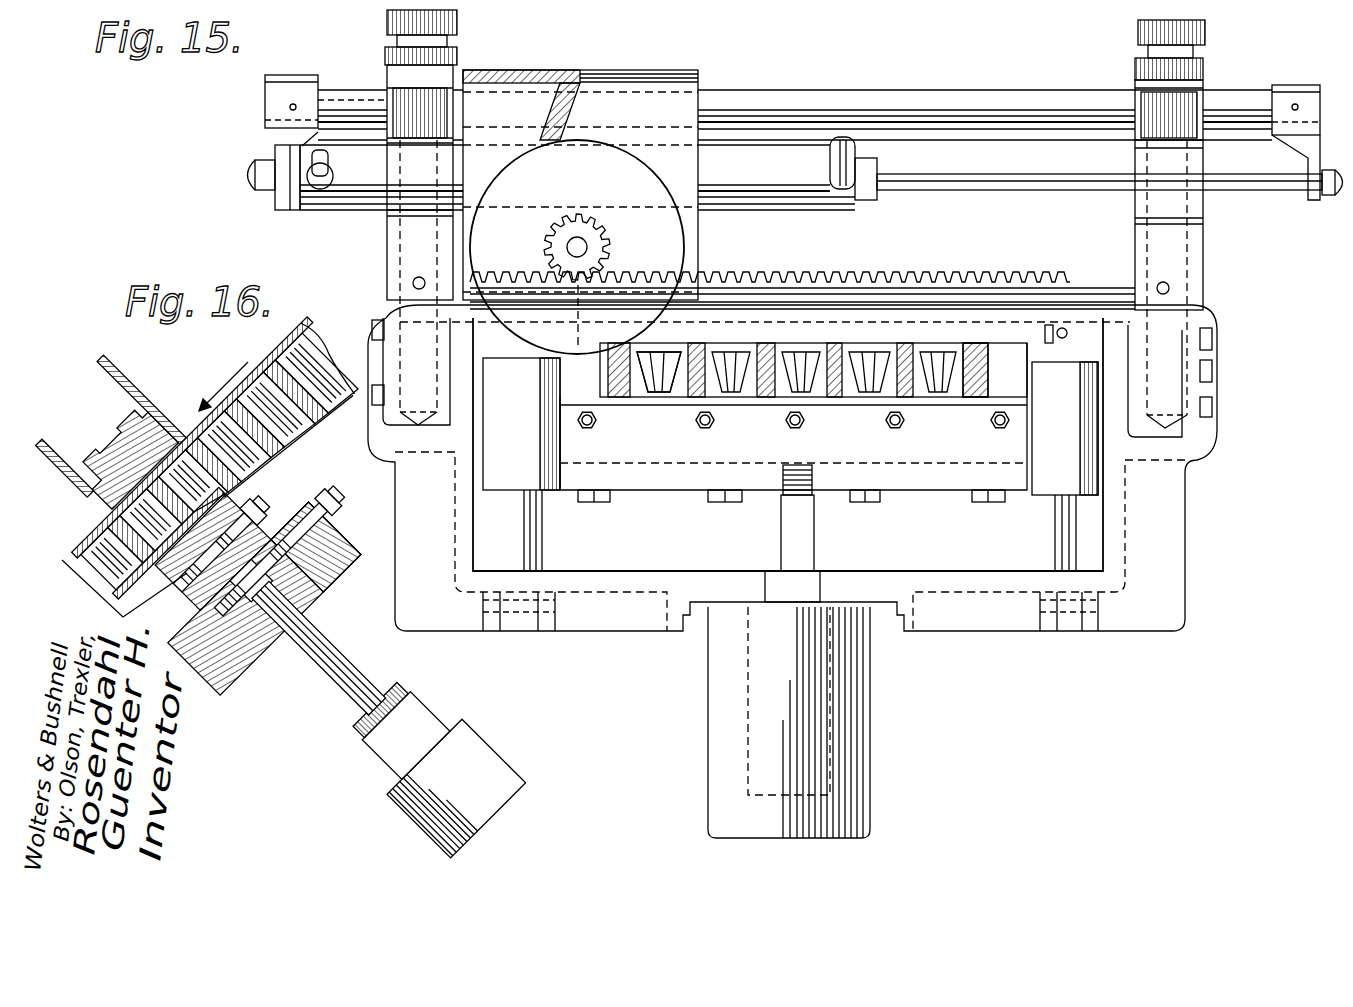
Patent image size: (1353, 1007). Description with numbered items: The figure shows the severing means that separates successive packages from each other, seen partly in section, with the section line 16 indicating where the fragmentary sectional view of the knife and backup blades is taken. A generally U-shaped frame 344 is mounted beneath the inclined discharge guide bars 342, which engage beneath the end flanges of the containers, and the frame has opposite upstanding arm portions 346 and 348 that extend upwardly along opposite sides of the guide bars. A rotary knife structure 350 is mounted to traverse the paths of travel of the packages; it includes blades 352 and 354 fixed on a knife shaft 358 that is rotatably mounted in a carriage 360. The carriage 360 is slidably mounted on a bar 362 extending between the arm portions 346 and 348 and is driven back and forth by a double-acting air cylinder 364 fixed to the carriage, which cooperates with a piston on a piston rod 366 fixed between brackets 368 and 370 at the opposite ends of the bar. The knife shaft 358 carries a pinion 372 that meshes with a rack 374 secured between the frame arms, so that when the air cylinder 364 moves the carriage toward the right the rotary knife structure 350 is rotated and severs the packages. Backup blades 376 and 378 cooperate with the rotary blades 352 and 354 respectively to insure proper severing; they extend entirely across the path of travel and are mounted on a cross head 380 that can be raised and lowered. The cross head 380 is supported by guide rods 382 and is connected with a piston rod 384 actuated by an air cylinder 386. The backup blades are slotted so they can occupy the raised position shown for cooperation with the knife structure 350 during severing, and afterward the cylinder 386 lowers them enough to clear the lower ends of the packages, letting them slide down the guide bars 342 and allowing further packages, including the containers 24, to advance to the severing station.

In FIG. 15, the section line 16- 16 is at (600, 283).
In FIG. 15, the nozzle 24 is at (690, 387).
In FIG. 15, the discharge guide bars 342 is at (832, 396).
In FIG. 16, the discharge guide bars 342 is at (221, 466).
In FIG. 15, the frame 344 is at (473, 631).
In FIG. 15, the upstanding arm portion 346 is at (390, 247).
In FIG. 15, the upstanding arm portion 348 is at (1192, 243).
In FIG. 15, the rotary knife structure 350 is at (697, 243).
In FIG. 16, the blade 352 is at (65, 437).
In FIG. 16, the blade 354 is at (135, 383).
In FIG. 15, the knife shaft 358 is at (572, 245).
In FIG. 15, the carriage 360 is at (675, 80).
In FIG. 15, the bar 362 is at (882, 106).
In FIG. 15, the double-acting air cylinder 364 is at (792, 184).
In FIG. 15, the piston rod 366 is at (955, 178).
In FIG. 15, the bracket 368 is at (282, 138).
In FIG. 15, the bracket 370 is at (1300, 155).
In FIG. 15, the pinion 372 is at (592, 233).
In FIG. 15, the rack 374 is at (873, 273).
In FIG. 15, the backup blade 376 is at (1028, 335).
In FIG. 16, the backup blade 376 is at (150, 585).
In FIG. 15, the backup blade 378 is at (1000, 388).
In FIG. 16, the backup blade 378 is at (245, 492).
In FIG. 16, the cross head 380 is at (232, 667).
In FIG. 15, the guide rods 382 is at (530, 543).
In FIG. 15, the piston rod 384 is at (790, 548).
In FIG. 16, the piston rod 384 is at (357, 687).
In FIG. 15, the air cylinder 386 is at (848, 720).
In FIG. 16, the air cylinder 386 is at (492, 771).